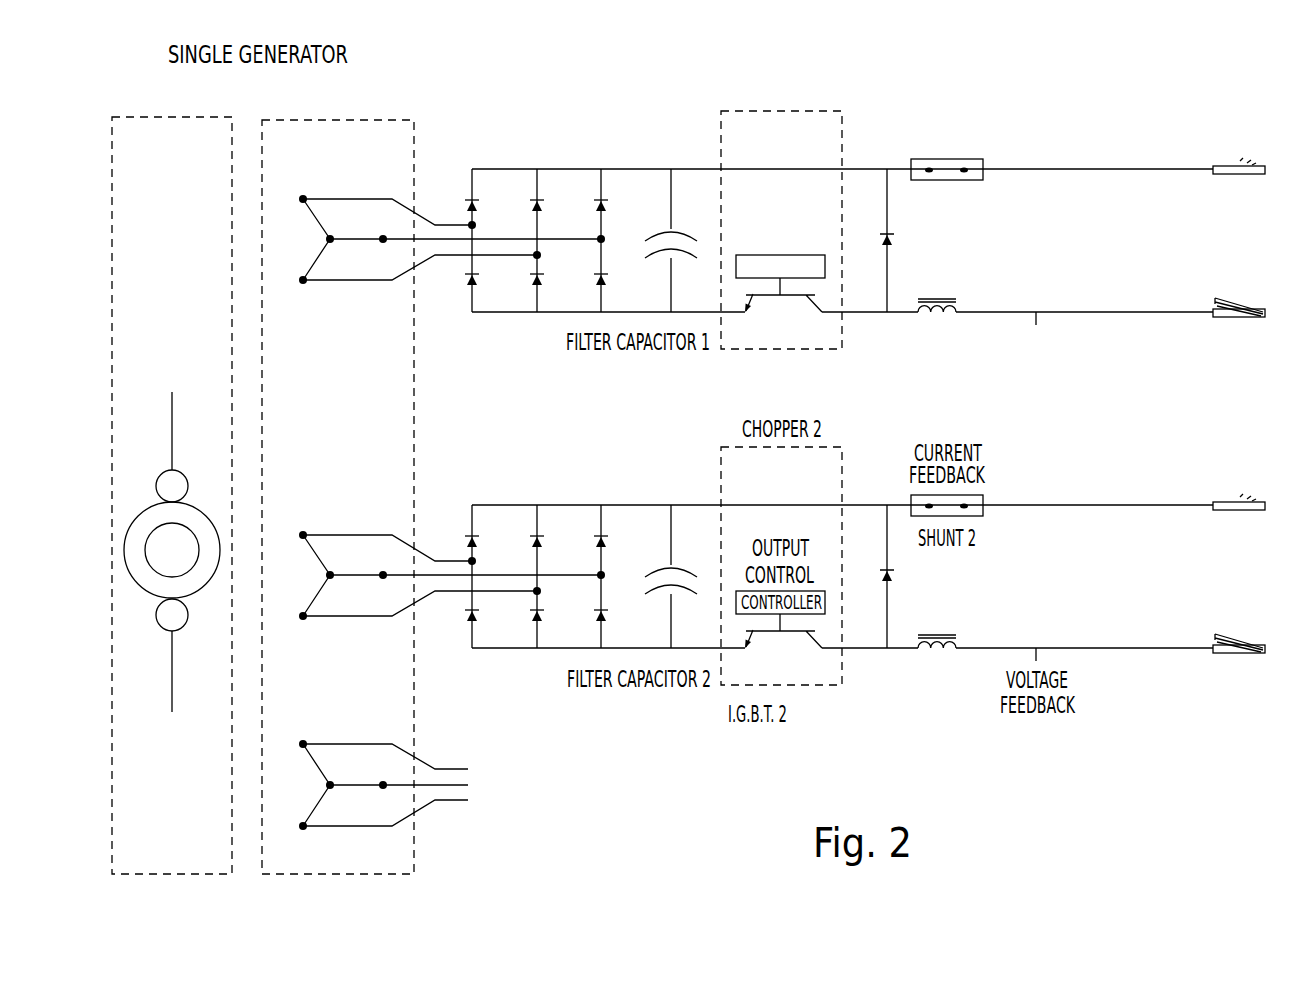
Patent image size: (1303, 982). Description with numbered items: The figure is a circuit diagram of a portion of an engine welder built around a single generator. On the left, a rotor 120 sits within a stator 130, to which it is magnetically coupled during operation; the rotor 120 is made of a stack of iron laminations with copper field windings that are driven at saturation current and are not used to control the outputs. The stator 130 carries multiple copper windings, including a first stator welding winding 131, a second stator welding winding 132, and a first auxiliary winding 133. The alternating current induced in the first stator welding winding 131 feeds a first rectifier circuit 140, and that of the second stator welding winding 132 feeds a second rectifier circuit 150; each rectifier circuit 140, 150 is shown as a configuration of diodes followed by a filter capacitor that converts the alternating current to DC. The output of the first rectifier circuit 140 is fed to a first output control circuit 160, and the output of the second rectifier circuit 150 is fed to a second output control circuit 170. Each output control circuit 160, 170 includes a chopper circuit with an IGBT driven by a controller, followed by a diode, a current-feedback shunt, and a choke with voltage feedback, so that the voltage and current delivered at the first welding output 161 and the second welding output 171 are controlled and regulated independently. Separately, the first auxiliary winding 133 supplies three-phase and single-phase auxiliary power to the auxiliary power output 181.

The rotor 120 is at (112, 117).
The stator 130 is at (414, 120).
The first stator welding winding 131 is at (309, 182).
The second stator welding winding 132 is at (308, 525).
The first auxiliary winding 133 is at (309, 733).
The first rectifier circuit 140 is at (568, 138).
The second rectifier circuit 150 is at (541, 525).
The first output control circuit 160 is at (873, 102).
The first welding output 161 is at (1258, 244).
The second output control circuit 170 is at (958, 684).
The second welding output 171 is at (1239, 573).
The auxiliary power output 181 is at (635, 856).